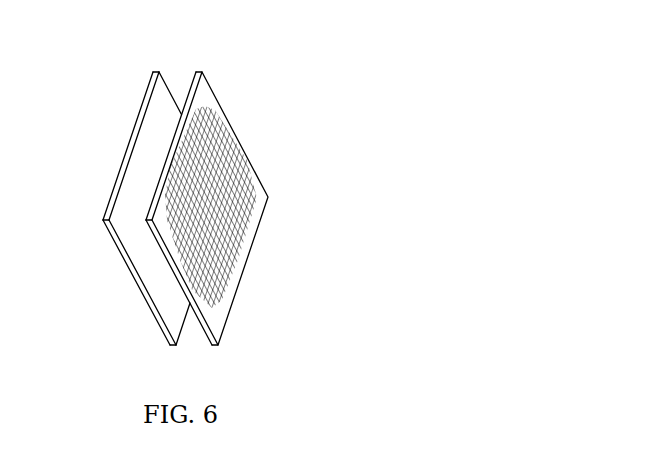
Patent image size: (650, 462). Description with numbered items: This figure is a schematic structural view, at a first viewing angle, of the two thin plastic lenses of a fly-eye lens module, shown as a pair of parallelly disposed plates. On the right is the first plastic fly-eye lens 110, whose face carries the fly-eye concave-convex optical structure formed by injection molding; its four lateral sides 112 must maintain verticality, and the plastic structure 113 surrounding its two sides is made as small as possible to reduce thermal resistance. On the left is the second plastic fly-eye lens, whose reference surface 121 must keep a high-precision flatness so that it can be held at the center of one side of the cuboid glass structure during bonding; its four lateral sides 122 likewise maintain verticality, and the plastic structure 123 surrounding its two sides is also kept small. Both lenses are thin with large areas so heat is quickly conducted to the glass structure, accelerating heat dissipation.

The first plastic fly-eye lens 110 is at (229, 195).
The lateral sides of the first plastic fly-eye lens 112 is at (197, 82).
The plastic structure surrounding the first plastic fly-eye lens 113 is at (208, 328).
The reference surface of the second plastic fly-eye lens 121 is at (141, 184).
The lateral sides of the second plastic fly-eye lens 122 is at (135, 138).
The plastic structure surrounding the second plastic fly-eye lens 123 is at (138, 283).